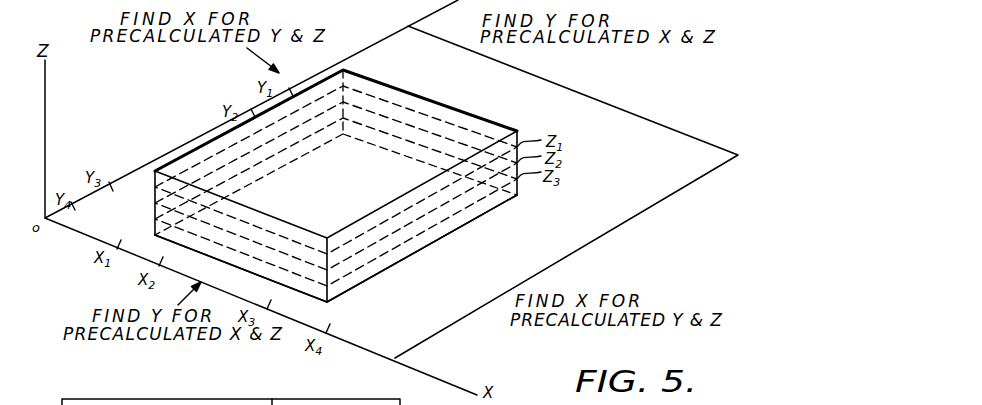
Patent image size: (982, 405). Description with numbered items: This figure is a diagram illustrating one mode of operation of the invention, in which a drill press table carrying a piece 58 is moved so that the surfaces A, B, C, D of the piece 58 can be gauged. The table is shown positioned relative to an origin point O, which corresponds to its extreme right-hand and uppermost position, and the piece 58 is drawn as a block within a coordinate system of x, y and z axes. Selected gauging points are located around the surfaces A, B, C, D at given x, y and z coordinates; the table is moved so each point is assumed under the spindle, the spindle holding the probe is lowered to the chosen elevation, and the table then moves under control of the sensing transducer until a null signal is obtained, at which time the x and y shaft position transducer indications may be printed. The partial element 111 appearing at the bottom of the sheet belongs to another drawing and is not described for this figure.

The piece 58 is at (155, 212).
The lower figure element (partially shown) 111 is at (272, 399).
The surface A is at (437, 106).
The surface B is at (399, 250).
The surface C is at (250, 266).
The surface D is at (271, 114).